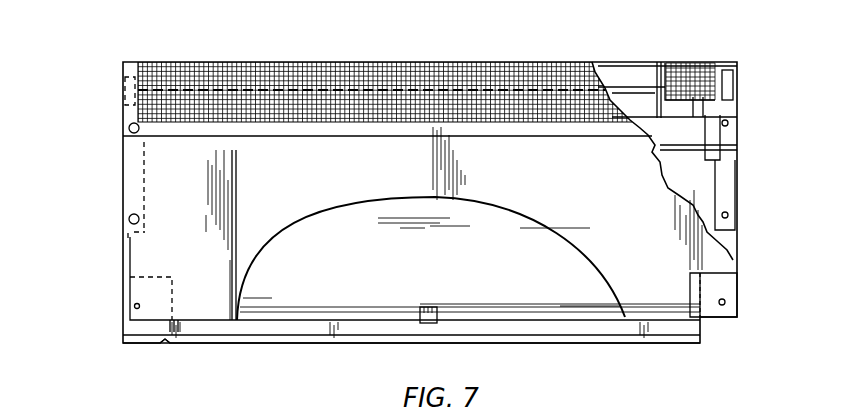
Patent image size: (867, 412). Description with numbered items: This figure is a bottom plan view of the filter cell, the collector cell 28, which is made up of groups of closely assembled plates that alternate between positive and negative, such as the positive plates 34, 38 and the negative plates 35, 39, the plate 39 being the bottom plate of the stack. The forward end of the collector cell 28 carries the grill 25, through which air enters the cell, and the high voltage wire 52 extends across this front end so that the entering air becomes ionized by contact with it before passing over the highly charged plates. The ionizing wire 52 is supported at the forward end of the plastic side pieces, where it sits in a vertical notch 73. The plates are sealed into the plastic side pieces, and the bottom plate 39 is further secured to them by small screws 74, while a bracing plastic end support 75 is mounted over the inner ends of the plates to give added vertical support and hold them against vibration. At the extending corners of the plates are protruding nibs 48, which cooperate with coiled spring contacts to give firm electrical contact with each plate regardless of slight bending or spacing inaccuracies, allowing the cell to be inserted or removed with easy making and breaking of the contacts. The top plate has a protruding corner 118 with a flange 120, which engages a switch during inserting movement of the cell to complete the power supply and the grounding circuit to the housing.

The grill 25 is at (462, 64).
The collector cell 28 is at (112, 207).
The positive plate 34 is at (686, 110).
The negative plate 35 is at (600, 72).
The positive plate 38 is at (442, 255).
The bottom plate 39 is at (216, 295).
The protruding nib 48 is at (724, 301).
The high voltage wire 52 is at (632, 85).
The vertical notch 73 is at (730, 88).
The small screw 74 is at (728, 123).
The bracing plastic end support 75 is at (433, 307).
The protruding corner 118 is at (174, 330).
The flange 120 is at (143, 345).